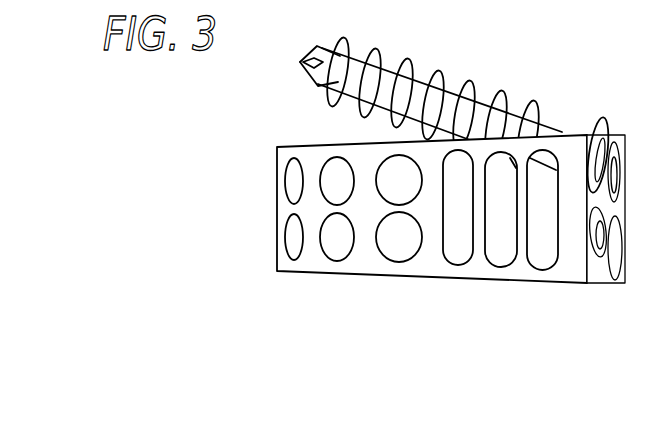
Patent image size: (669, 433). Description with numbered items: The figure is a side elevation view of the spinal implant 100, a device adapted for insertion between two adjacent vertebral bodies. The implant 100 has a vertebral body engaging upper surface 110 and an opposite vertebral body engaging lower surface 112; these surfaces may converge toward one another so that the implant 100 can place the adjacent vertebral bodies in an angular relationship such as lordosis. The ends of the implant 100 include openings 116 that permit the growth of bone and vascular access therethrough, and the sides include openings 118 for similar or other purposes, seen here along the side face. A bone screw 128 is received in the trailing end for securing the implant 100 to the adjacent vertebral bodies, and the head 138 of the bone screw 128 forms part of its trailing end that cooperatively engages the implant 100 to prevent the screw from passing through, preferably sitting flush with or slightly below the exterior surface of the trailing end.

The spinal implant 100 is at (213, 192).
The upper surface 110 is at (444, 187).
The lower surface 112 is at (416, 278).
The openings 116 is at (292, 238).
The openings 118 is at (543, 247).
The bone screw 128 is at (387, 63).
The head 138 is at (603, 122).